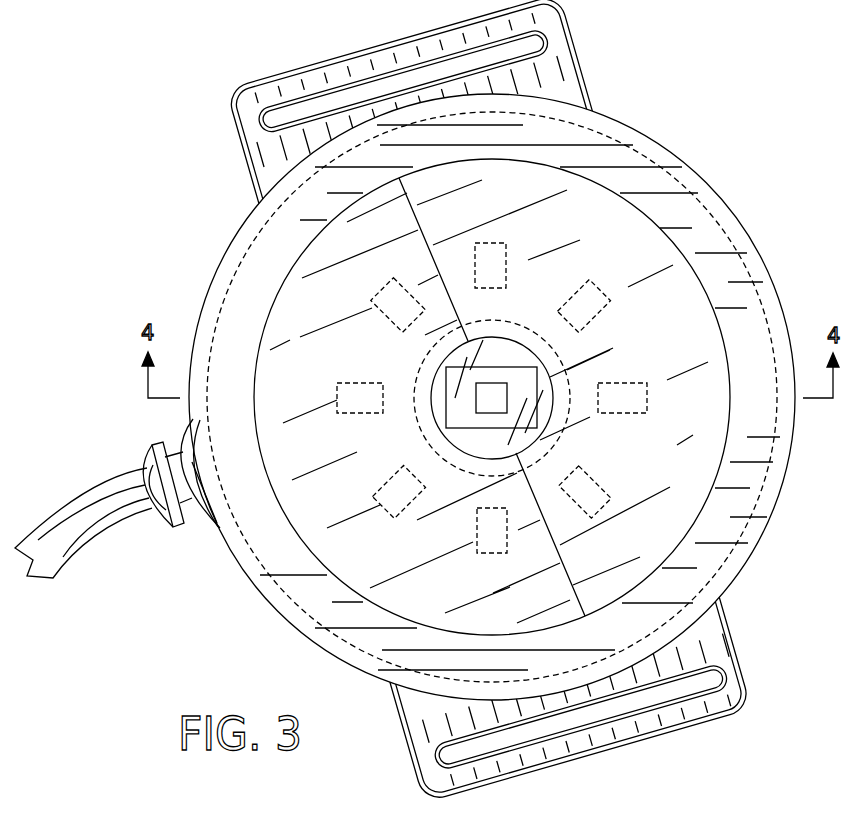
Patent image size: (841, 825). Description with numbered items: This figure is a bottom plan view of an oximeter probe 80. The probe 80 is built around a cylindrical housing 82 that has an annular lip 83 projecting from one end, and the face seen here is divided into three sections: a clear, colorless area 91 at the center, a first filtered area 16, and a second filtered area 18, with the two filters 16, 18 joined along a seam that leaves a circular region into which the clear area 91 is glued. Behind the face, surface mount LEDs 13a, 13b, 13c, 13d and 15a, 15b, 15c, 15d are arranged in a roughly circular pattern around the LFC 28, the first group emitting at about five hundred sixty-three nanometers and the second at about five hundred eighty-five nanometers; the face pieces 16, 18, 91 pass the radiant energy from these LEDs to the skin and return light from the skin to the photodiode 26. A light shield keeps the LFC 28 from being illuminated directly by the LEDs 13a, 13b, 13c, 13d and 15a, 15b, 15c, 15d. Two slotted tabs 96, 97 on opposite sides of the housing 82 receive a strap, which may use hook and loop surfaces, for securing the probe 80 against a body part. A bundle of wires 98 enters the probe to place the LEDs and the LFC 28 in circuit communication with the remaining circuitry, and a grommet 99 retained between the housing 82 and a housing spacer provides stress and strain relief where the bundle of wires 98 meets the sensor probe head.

The probe 80 is at (504, 364).
The cylindrical housing 82 is at (738, 230).
The annular lip 83 is at (662, 208).
The first filtered area 16 is at (368, 543).
The second filtered area 18 is at (670, 487).
The clear, colorless area 91 is at (490, 353).
The LFC 28 is at (445, 395).
The photodiode 26 is at (488, 403).
The surface mount LED 13a is at (372, 300).
The surface mount LED 13b is at (337, 383).
The surface mount LED 13c is at (385, 485).
The surface mount LED 13d is at (489, 553).
The surface mount LED 15a is at (588, 482).
The surface mount LED 15b is at (636, 383).
The surface mount LED 15c is at (585, 283).
The surface mount LED 15d is at (502, 243).
The slotted tab 96 is at (332, 70).
The slotted tab 97 is at (677, 722).
The bundle of wires 98 is at (117, 500).
The grommet 99 is at (153, 506).